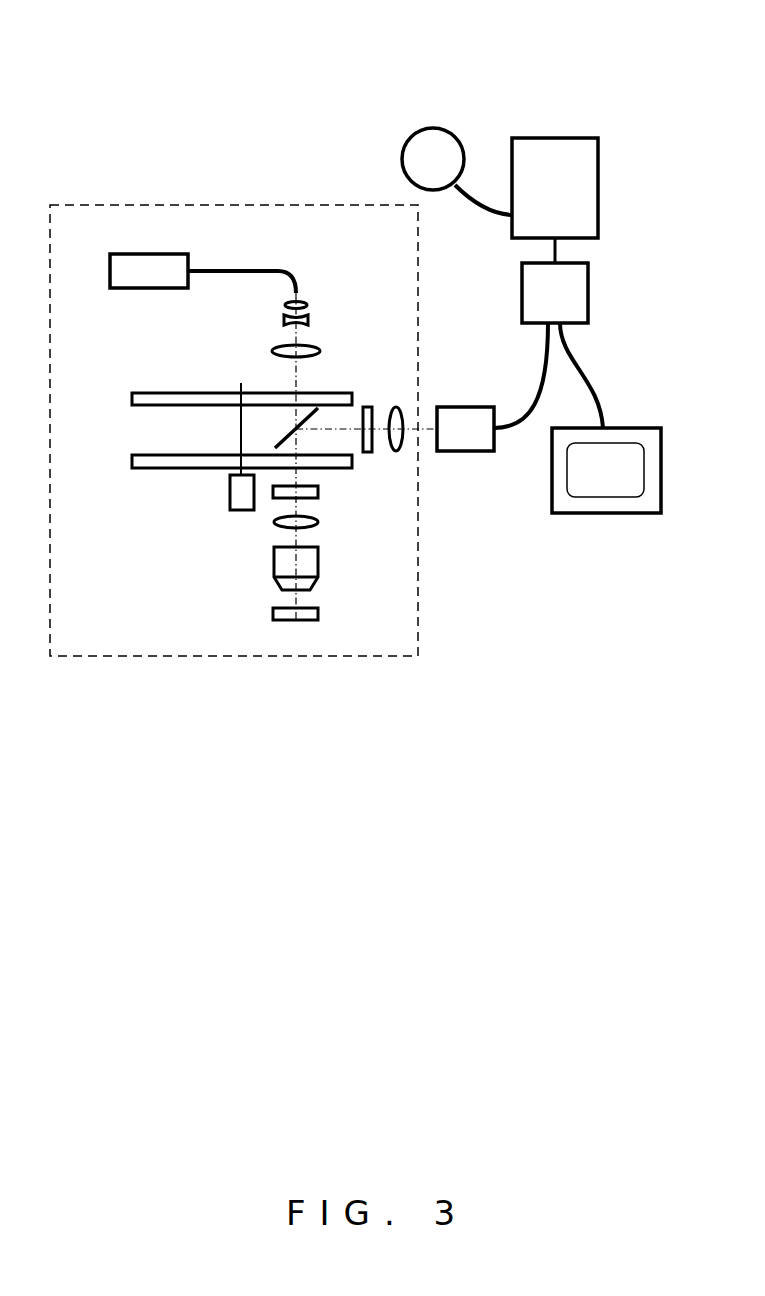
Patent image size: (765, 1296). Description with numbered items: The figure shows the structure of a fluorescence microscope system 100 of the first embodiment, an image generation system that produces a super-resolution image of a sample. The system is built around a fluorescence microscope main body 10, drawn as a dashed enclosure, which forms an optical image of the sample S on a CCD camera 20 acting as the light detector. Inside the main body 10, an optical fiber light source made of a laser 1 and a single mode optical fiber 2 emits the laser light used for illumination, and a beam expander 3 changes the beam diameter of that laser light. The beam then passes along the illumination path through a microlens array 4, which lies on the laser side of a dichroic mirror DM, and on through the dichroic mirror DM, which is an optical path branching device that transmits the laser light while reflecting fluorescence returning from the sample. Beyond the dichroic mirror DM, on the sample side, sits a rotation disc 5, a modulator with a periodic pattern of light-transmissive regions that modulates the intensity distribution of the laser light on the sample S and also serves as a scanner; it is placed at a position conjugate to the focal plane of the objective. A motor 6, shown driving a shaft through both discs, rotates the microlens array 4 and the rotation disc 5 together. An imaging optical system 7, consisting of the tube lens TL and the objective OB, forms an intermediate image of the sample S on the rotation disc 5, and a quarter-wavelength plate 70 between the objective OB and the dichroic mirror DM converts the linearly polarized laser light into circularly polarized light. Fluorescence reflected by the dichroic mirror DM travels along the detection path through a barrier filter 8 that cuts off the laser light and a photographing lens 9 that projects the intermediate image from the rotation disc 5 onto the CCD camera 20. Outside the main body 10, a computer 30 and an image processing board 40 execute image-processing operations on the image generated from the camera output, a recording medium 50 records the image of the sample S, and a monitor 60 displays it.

The fluorescence microscope system 100 is at (648, 40).
The fluorescence microscope main body 10 is at (90, 205).
The laser 1 is at (148, 254).
The single mode optical fiber 2 is at (234, 268).
The beam expander 3 is at (266, 362).
The microlens array 4 is at (147, 392).
The rotation disc 5 is at (137, 455).
The dichroic mirror DM is at (275, 447).
The motor 6 is at (230, 496).
The 1/4-wavelength plate 70 is at (318, 492).
The imaging optical system 7 is at (230, 575).
The tube lens TL is at (274, 524).
The objective OB is at (274, 567).
The sample S is at (268, 621).
The barrier filter 8 is at (367, 452).
The photographing lens 9 is at (397, 452).
The CCD camera 20 is at (454, 405).
The computer 30 is at (588, 298).
The image processing board 40 is at (598, 182).
The recording medium 50 is at (433, 128).
The monitor 60 is at (622, 425).